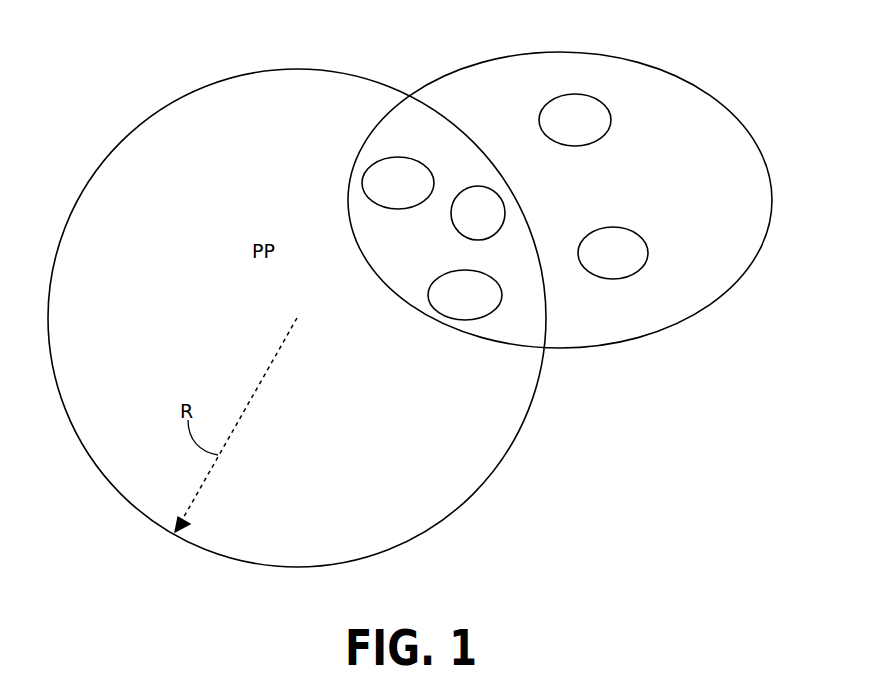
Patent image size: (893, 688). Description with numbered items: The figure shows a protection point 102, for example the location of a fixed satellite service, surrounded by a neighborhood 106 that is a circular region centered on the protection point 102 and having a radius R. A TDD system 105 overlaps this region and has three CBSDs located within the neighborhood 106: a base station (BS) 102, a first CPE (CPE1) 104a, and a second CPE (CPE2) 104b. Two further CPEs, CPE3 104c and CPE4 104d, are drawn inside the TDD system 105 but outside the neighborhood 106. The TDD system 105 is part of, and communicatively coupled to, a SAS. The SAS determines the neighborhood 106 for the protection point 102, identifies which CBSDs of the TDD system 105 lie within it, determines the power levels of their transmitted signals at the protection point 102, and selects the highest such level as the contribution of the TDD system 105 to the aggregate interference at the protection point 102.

The protection point 102 is at (450, 210).
The first CPE (CPE1) 104a is at (448, 152).
The second CPE (CPE2) 104b is at (517, 265).
The customer premises equipment CPE3 104c is at (611, 118).
The customer premises equipment CPE4 104d is at (665, 222).
The TDD system 105 is at (572, 52).
The neighborhood 106 is at (533, 402).